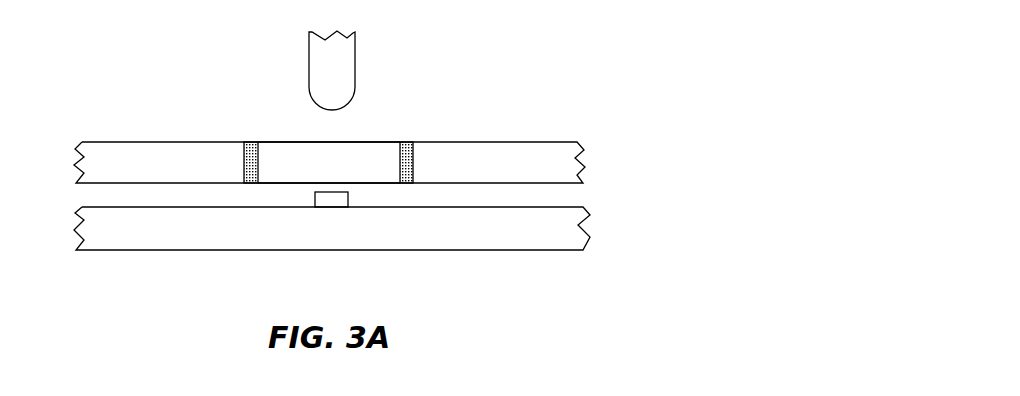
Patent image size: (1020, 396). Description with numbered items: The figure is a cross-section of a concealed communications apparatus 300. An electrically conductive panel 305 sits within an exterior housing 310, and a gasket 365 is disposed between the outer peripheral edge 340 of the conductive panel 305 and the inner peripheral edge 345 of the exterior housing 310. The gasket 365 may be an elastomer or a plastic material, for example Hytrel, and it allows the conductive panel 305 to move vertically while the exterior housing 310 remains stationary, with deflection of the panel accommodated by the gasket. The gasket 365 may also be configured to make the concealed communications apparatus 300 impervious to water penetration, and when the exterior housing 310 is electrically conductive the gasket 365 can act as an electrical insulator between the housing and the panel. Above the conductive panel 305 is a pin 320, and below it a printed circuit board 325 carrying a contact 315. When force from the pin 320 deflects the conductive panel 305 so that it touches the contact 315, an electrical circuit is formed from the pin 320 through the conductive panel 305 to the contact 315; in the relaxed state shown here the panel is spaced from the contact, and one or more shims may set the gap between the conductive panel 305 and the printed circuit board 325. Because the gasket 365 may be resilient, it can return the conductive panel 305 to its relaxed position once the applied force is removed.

The concealed communications apparatus 300 is at (575, 40).
The conductive panel 305 is at (363, 157).
The exterior housing 310 is at (553, 165).
The contact 315 is at (335, 197).
The pin 320 is at (335, 45).
The printed circuit board 325 is at (567, 223).
The outer peripheral edge 340 is at (258, 157).
The inner peripheral edge 345 is at (245, 157).
The gasket 365 is at (408, 140).